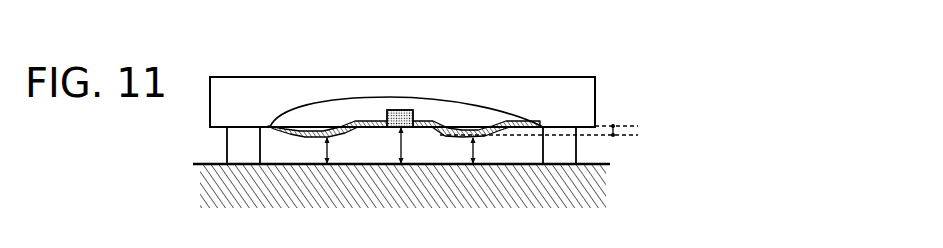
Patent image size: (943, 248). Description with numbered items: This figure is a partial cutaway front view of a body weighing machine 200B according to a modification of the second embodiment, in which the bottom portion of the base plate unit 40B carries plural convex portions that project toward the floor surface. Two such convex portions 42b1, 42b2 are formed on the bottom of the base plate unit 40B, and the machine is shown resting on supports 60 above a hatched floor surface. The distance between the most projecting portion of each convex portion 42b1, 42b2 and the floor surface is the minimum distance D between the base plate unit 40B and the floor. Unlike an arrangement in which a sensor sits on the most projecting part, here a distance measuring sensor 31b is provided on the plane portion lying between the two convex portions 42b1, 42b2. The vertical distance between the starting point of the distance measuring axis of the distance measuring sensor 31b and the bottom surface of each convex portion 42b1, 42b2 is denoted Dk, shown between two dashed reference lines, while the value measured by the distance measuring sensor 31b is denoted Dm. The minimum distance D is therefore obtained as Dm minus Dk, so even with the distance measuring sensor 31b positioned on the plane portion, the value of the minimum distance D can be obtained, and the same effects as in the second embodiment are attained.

The body weighing machine 200B is at (830, 57).
The base plate unit 40B is at (585, 77).
The convex portion 42b1 is at (300, 130).
The convex portion 42b2 is at (472, 131).
The distance measuring sensor 31b is at (398, 110).
The support member 60 is at (227, 146).
The minimum distance D is at (325, 143).
The measured value Dm is at (401, 143).
The vertical distance Dk is at (620, 127).